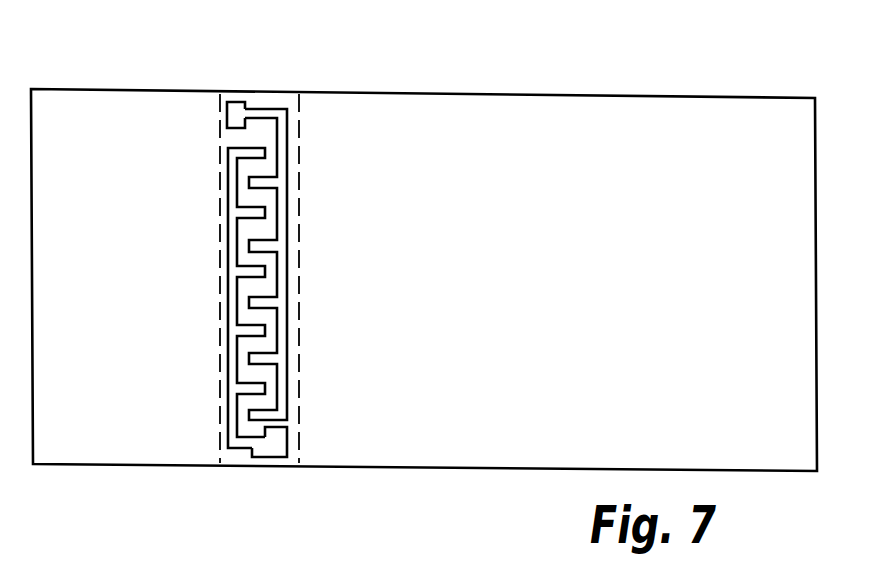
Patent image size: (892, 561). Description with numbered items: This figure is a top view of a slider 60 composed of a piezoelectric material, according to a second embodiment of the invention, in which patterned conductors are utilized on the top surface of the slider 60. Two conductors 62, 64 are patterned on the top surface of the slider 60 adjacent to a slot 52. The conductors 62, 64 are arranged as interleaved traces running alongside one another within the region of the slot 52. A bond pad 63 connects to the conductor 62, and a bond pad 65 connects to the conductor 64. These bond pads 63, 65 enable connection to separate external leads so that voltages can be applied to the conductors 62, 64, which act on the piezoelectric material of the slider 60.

The slider 60 is at (818, 108).
The slot 52 is at (287, 98).
The conductor 64 is at (257, 109).
The bond pad 65 is at (236, 101).
The conductor 62 is at (248, 452).
The bond pad 63 is at (278, 458).